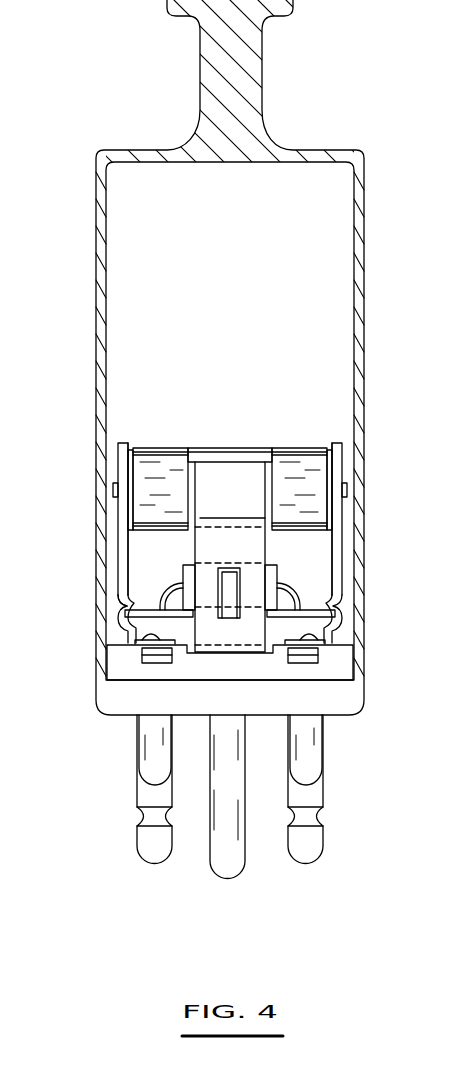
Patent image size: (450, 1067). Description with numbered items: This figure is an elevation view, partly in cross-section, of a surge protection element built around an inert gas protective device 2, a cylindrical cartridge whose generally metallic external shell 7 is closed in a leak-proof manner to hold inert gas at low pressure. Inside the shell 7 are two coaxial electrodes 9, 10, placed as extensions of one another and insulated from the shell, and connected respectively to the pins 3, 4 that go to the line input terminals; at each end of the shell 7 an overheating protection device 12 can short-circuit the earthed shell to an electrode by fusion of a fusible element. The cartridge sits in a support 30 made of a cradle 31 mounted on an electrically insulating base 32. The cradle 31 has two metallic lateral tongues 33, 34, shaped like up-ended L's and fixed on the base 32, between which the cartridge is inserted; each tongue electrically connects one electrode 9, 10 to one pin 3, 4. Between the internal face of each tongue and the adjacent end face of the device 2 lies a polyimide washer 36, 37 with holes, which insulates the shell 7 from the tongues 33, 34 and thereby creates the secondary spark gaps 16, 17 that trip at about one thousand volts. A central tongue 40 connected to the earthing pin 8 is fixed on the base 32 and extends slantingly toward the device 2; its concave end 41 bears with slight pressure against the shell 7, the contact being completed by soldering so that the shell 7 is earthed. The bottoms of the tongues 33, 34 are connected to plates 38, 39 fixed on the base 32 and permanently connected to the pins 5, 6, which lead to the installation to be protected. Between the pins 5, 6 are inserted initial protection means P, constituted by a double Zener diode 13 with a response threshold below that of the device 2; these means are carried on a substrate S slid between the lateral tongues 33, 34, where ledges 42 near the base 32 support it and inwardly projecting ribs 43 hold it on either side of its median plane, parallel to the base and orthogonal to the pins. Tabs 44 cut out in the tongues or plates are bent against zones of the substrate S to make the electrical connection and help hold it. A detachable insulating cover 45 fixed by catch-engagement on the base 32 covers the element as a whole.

The inert gas protective device 2 is at (251, 449).
The pin 3 is at (148, 847).
The pin 4 is at (307, 843).
The pin 5 is at (147, 767).
The pin 6 is at (310, 743).
The external shell 7 is at (200, 455).
The earthing pin 8 is at (222, 857).
The electrode 9 is at (114, 487).
The electrode 10 is at (345, 490).
The overheating protection device 12 is at (165, 436).
The double Zener diode 13 is at (280, 567).
The secondary spark gap 16 is at (124, 438).
The secondary spark gap 17 is at (338, 437).
The support 30 is at (121, 633).
The cradle 31 is at (112, 537).
The electrically insulating base 32 is at (128, 667).
The lateral tongue 33 is at (120, 520).
The lateral tongue 34 is at (338, 515).
The washer 36 is at (130, 463).
The washer 37 is at (330, 463).
The plate 38 is at (137, 645).
The plate 39 is at (325, 645).
The central tongue 40 is at (228, 550).
The end of central tongue 41 is at (210, 483).
The ledge 42 is at (118, 622).
The inwardly projecting rib 43 is at (118, 602).
The tab 44 is at (327, 588).
The detachable cover 45 is at (364, 228).
The initial protection means P is at (180, 567).
The substrate S is at (148, 607).